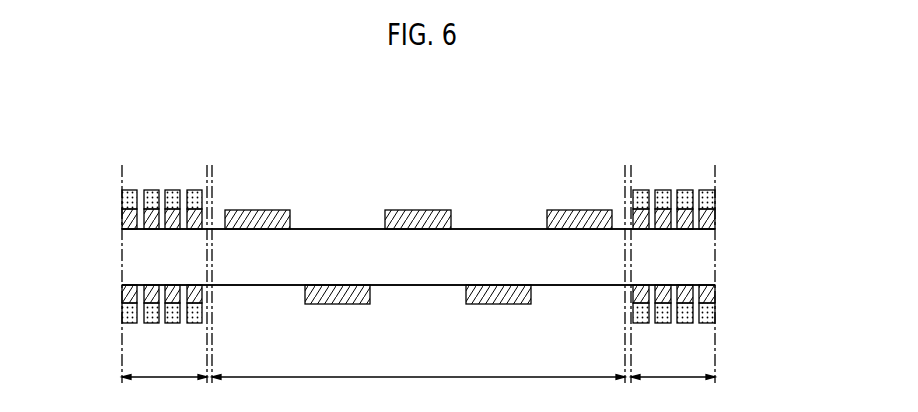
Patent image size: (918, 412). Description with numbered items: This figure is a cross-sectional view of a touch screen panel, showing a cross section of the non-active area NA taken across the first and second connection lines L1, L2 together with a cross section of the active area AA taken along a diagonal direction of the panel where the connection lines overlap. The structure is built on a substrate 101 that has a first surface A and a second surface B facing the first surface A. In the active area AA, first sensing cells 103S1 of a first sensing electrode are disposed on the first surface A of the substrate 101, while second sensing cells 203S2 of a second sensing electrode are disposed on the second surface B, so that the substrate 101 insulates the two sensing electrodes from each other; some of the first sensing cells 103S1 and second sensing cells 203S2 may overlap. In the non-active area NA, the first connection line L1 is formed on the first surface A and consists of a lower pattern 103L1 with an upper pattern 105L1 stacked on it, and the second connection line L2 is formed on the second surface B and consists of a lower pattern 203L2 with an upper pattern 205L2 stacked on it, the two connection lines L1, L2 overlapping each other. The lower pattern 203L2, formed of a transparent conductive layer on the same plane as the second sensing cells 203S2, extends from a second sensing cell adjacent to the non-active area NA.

The substrate 101 is at (715, 263).
The lower pattern 103L1 is at (418, 219).
The upper pattern 105L1 is at (122, 199).
The lower pattern 203L2 is at (122, 292).
The upper pattern 205L2 is at (418, 313).
The first sensing cells 103S1 is at (425, 210).
The second sensing cells 203S2 is at (507, 304).
The first connection line L1 is at (419, 210).
The second connection line L2 is at (419, 304).
The first surface A is at (502, 218).
The second surface B is at (579, 296).
The non-active area NA is at (418, 282).
The active area AA is at (418, 282).